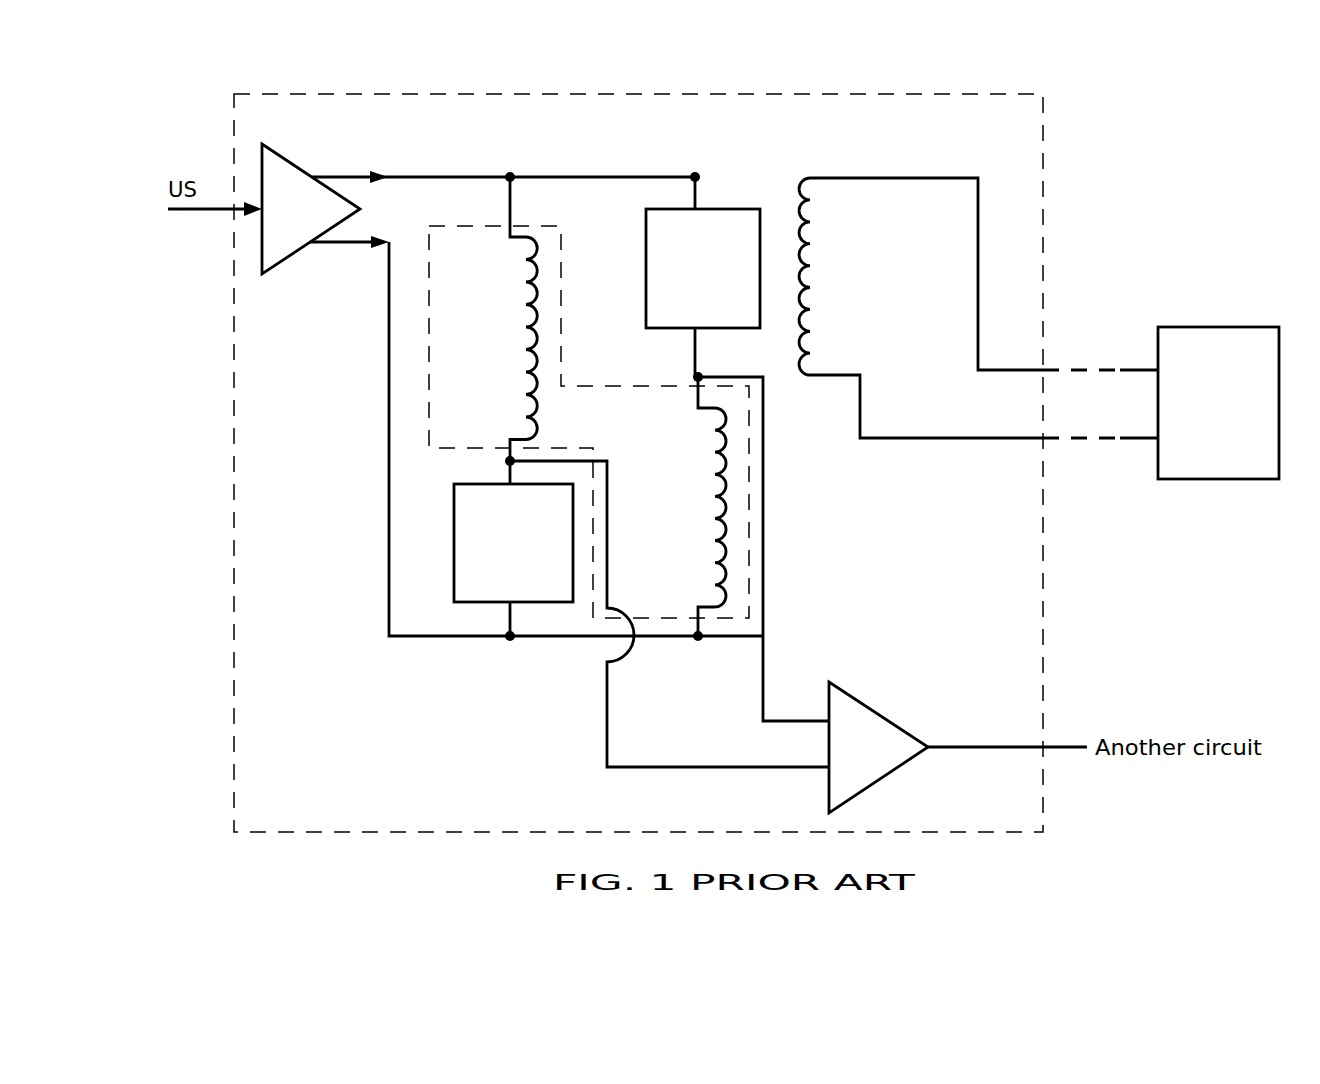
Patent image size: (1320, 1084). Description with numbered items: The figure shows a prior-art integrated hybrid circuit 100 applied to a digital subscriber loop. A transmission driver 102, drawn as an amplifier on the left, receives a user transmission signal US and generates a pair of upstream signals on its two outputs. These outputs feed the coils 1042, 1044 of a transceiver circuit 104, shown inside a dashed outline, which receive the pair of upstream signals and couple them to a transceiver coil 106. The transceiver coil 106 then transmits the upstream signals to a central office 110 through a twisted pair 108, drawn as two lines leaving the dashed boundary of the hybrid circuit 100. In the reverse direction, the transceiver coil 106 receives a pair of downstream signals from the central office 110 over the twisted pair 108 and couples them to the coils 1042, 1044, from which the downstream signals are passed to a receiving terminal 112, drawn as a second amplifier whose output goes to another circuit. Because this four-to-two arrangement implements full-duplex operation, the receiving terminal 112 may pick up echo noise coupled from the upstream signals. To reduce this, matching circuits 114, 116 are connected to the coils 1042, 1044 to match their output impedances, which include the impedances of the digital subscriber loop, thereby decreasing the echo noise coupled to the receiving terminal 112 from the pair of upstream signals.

The integrated hybrid circuit 100 is at (1045, 158).
The transmission driver 102 is at (297, 156).
The transceiver circuit 104 is at (562, 323).
The coil 1042 is at (518, 315).
The coil 1044 is at (710, 483).
The transceiver coil 106 is at (816, 273).
The twisted pair 108 is at (1013, 370).
The central office 110 is at (1216, 327).
The receiving terminal 112 is at (876, 708).
The matching circuit 114 is at (454, 543).
The matching circuit 116 is at (644, 266).